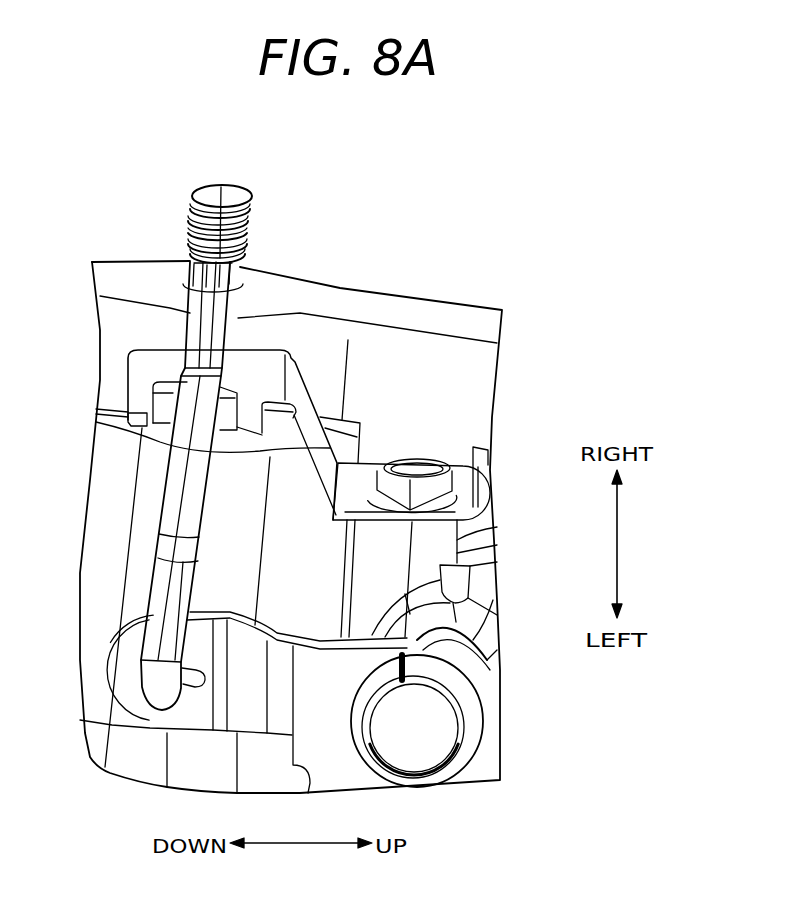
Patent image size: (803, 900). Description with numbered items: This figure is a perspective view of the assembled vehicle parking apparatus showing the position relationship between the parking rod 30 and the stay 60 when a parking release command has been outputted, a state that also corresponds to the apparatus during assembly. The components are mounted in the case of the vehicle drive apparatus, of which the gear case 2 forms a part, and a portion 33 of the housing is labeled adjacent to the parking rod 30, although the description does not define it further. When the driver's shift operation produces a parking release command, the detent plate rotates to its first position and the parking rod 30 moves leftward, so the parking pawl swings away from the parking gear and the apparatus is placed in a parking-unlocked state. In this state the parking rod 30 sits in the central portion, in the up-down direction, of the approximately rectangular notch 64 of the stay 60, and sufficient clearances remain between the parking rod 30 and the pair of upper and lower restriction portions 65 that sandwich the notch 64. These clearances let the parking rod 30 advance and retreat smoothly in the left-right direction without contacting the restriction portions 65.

The gear case 2 is at (118, 725).
The parking rod 30 is at (243, 248).
The column portion 33 is at (136, 482).
The stay 60 is at (143, 349).
The notch 64 is at (228, 407).
The restriction portions 65 is at (128, 405).